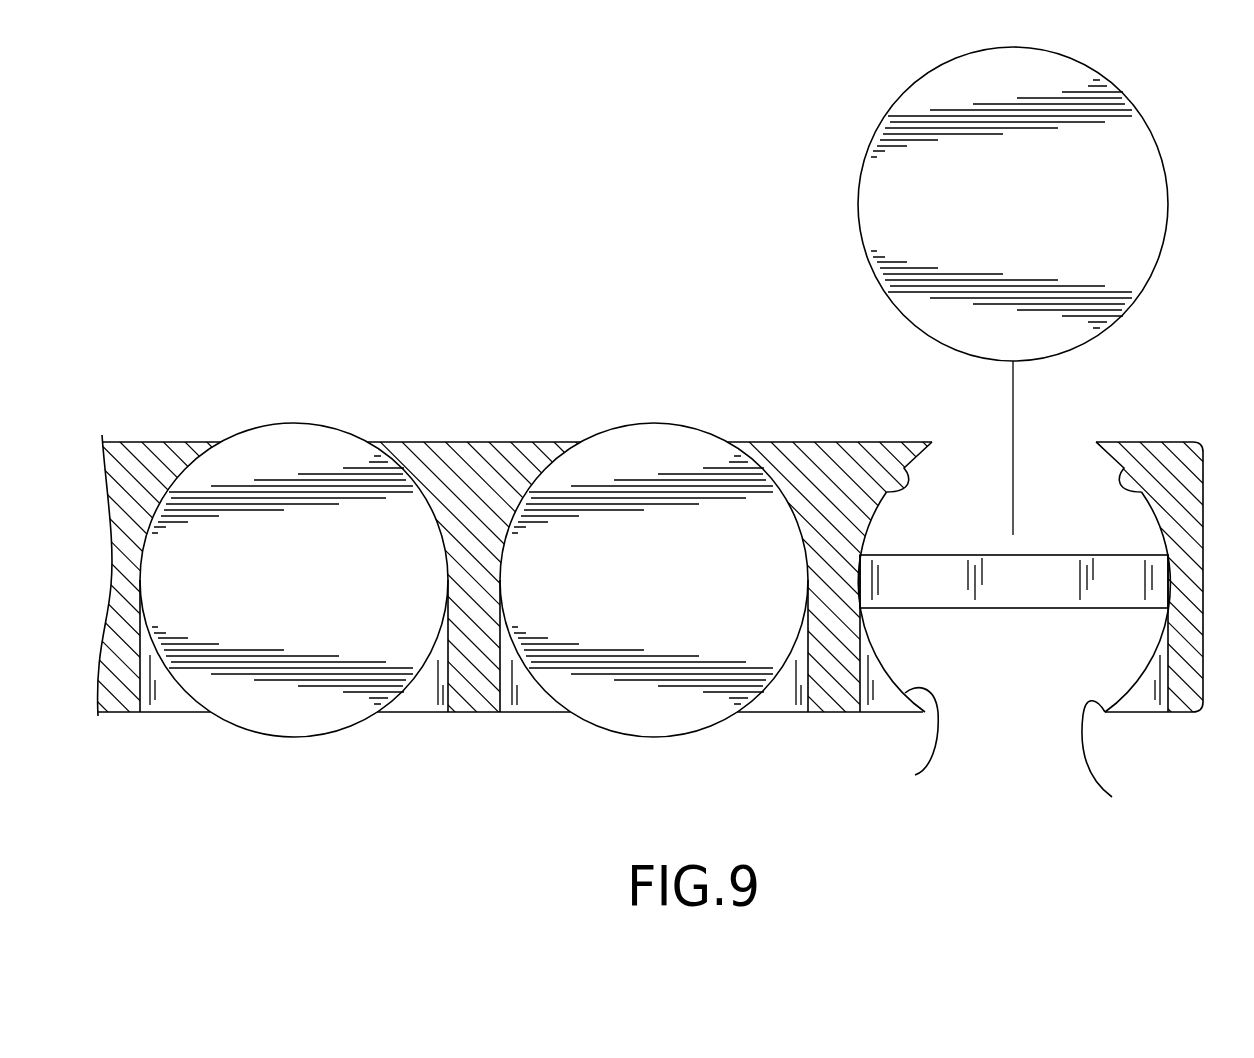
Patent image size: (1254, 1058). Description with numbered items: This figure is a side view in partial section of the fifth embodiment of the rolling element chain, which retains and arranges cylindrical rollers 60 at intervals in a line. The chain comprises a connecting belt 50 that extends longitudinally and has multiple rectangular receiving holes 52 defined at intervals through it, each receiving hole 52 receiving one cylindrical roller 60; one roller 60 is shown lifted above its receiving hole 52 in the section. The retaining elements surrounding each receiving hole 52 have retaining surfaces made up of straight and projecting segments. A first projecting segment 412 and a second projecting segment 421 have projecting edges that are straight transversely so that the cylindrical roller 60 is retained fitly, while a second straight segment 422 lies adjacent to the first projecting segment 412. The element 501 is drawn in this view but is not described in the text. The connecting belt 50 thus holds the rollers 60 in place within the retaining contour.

The cylindrical roller 60 is at (917, 193).
The second projecting segment 421 is at (905, 462).
The receiving hole 52 is at (863, 580).
The plate 501 is at (1027, 572).
The second straight segment 422 is at (868, 686).
The first projecting segment 412 is at (1014, 751).
The connecting belt 50 is at (1025, 690).